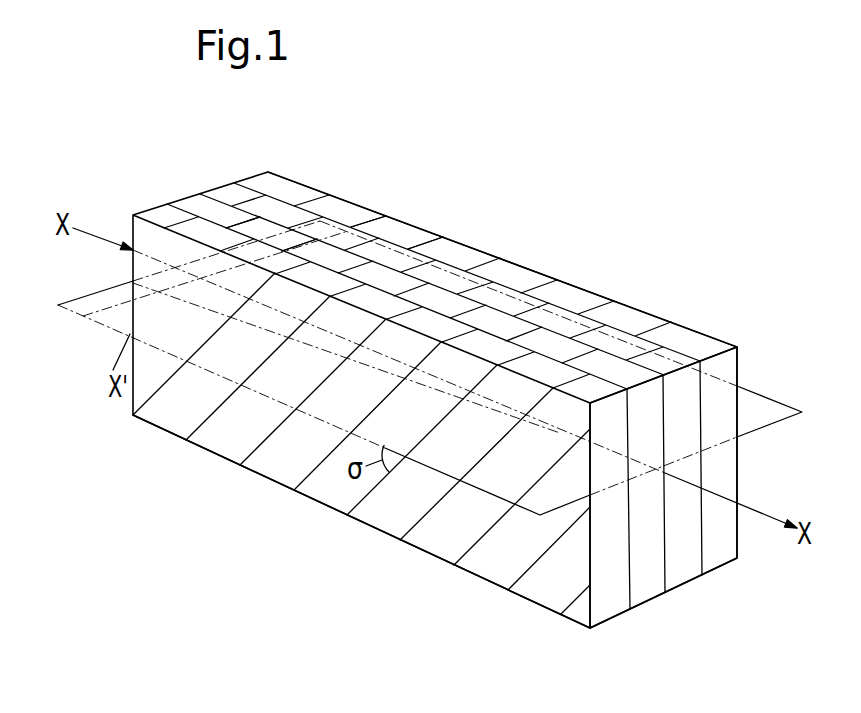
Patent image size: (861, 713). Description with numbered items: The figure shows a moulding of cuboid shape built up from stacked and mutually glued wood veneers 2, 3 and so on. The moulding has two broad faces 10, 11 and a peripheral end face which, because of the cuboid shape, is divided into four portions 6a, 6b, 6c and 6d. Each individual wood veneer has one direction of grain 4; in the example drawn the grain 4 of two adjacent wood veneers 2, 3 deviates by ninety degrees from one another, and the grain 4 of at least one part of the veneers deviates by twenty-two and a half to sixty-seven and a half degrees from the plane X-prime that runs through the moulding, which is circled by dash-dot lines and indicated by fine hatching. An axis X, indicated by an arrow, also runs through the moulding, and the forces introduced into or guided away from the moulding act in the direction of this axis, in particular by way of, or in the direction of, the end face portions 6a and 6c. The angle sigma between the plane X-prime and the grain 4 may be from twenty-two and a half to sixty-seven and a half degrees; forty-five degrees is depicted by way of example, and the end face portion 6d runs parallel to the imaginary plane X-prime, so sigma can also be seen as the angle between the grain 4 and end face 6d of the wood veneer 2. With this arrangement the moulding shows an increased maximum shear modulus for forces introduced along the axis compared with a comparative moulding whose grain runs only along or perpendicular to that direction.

The wood veneer 2 is at (273, 208).
The wood veneer 3 is at (390, 227).
The grain 4 is at (223, 406).
The broad face 10 is at (292, 462).
The broad face 11 is at (656, 314).
The end face portion 6a is at (132, 284).
The end face portion 6b is at (345, 515).
The end face portion 6c is at (642, 582).
The end face portion 6d is at (548, 302).